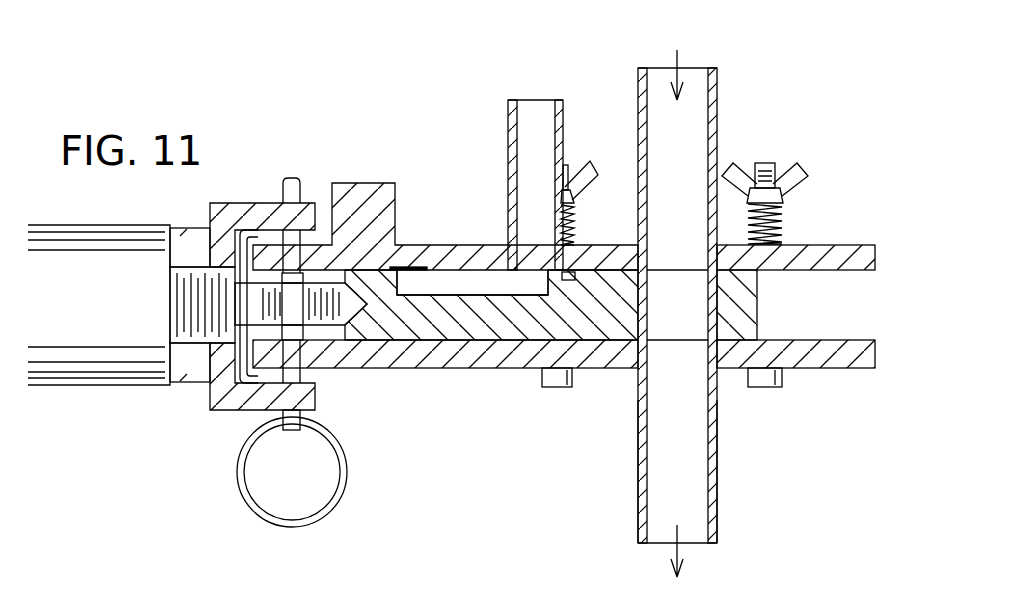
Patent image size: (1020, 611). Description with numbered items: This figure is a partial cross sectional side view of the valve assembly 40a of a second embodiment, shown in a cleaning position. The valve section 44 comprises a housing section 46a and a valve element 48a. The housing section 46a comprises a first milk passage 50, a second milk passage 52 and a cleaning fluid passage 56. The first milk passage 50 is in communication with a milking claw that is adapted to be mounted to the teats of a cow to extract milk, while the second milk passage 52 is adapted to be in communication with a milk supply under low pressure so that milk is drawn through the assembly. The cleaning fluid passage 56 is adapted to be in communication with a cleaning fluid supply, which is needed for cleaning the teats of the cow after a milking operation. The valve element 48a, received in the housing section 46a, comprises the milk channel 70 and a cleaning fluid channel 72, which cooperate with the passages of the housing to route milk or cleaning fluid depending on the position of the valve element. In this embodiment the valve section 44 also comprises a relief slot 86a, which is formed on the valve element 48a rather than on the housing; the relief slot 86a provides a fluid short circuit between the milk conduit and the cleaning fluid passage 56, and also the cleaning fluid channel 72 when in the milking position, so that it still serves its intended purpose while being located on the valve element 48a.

The valve assembly 40a is at (345, 158).
The valve section 44 is at (541, 400).
The housing section 46a is at (815, 256).
The valve element 48a is at (745, 297).
The first milk passage 50 is at (705, 76).
The second milk passage 52 is at (705, 457).
The cleaning fluid passage 56 is at (518, 128).
The milk channel 70 is at (698, 318).
The cleaning fluid channel 72 is at (452, 282).
The relief slot 86a is at (577, 275).